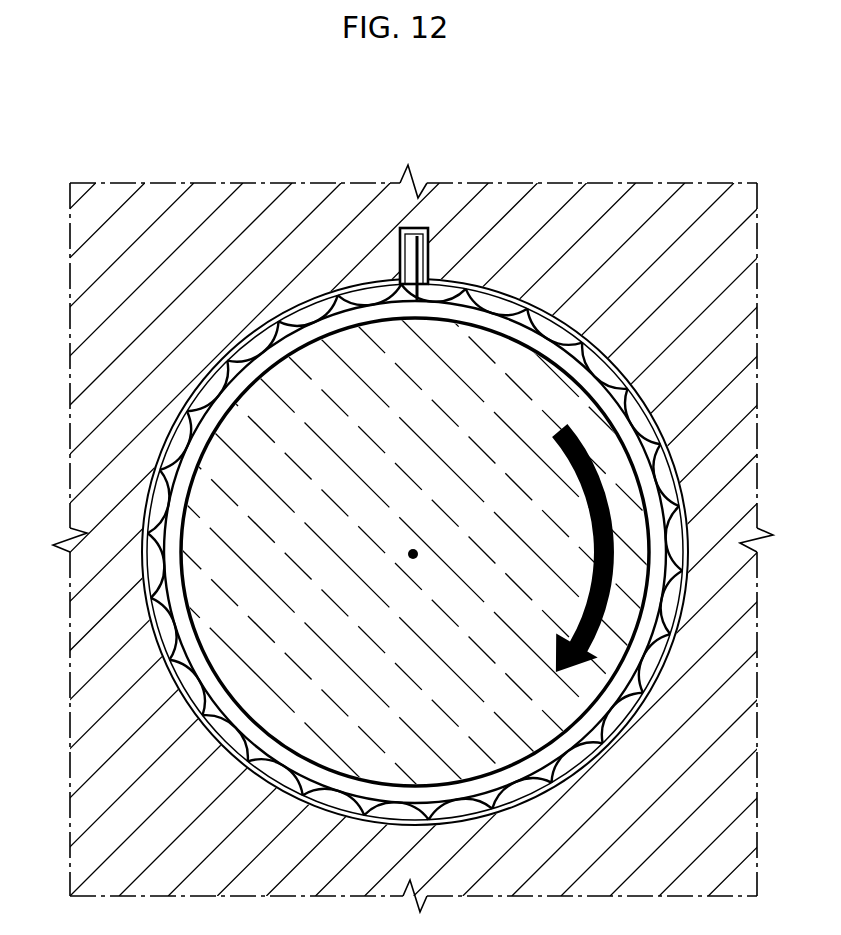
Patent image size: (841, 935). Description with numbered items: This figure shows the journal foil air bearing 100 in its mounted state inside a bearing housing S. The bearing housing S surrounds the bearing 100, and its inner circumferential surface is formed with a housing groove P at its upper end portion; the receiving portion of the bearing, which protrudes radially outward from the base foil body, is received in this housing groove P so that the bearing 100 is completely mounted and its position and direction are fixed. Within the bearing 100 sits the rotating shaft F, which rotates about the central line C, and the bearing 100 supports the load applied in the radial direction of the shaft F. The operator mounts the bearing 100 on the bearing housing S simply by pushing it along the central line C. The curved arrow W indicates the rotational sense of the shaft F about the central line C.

The journal foil air bearing 100 is at (363, 283).
The housing groove P is at (429, 253).
The bearing housing S is at (543, 200).
The rotating shaft F is at (540, 395).
The rotation direction W is at (574, 563).
The central line C is at (404, 563).